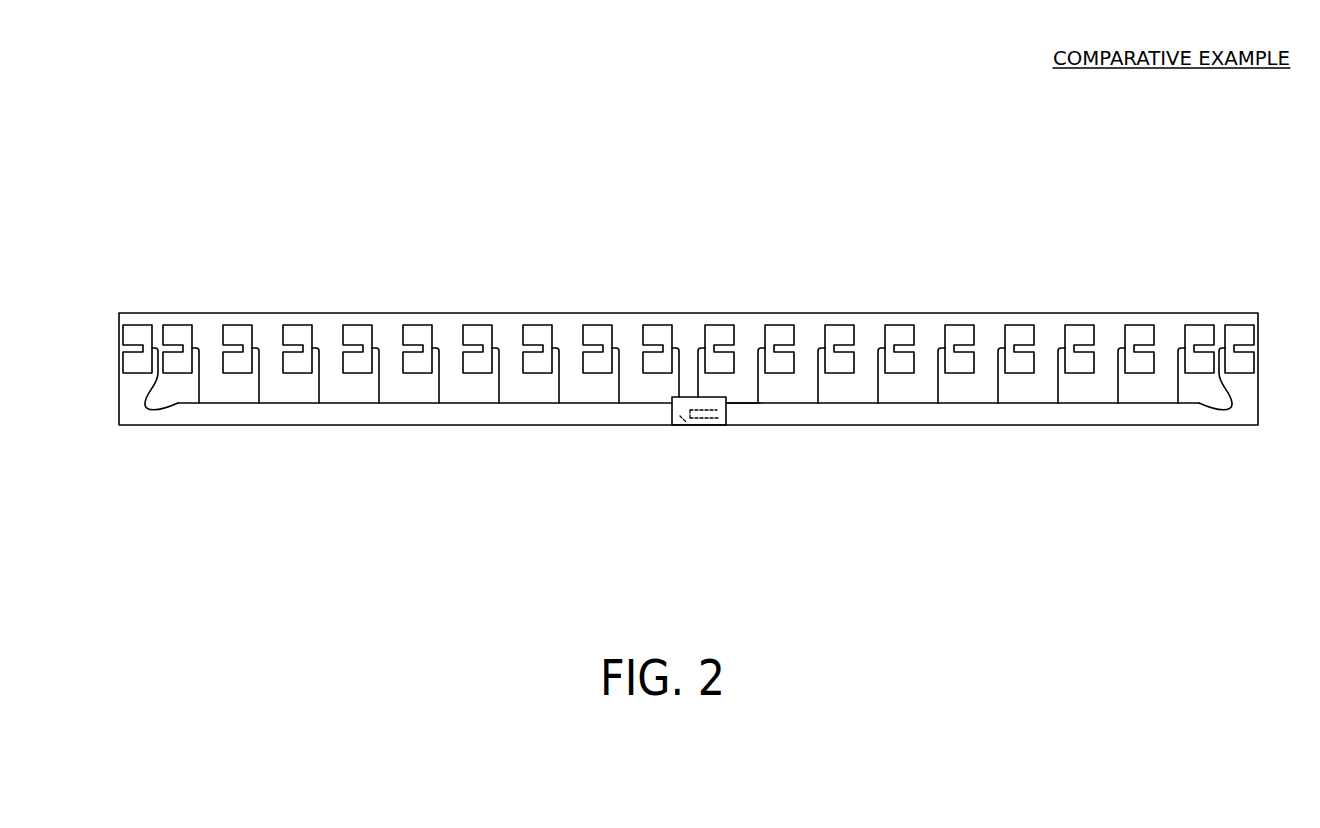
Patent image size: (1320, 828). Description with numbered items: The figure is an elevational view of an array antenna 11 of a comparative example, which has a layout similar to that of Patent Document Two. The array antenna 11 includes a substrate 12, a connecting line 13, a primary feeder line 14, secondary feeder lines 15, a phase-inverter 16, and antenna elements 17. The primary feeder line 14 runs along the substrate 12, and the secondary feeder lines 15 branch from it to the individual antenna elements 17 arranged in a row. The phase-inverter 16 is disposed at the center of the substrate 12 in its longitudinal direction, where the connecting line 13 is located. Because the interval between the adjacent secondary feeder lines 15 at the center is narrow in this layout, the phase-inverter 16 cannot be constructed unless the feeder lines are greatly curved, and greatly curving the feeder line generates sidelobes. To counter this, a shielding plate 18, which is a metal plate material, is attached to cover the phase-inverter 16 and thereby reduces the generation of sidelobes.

The array antenna 11 is at (148, 274).
The substrate 12 is at (622, 325).
The connecting line 13 is at (698, 428).
The primary feeder line 14 is at (583, 405).
The secondary feeder lines 15 is at (260, 383).
The phase-inverter 16 is at (733, 414).
The antenna elements 17 is at (238, 325).
The shielding plate 18 is at (680, 423).